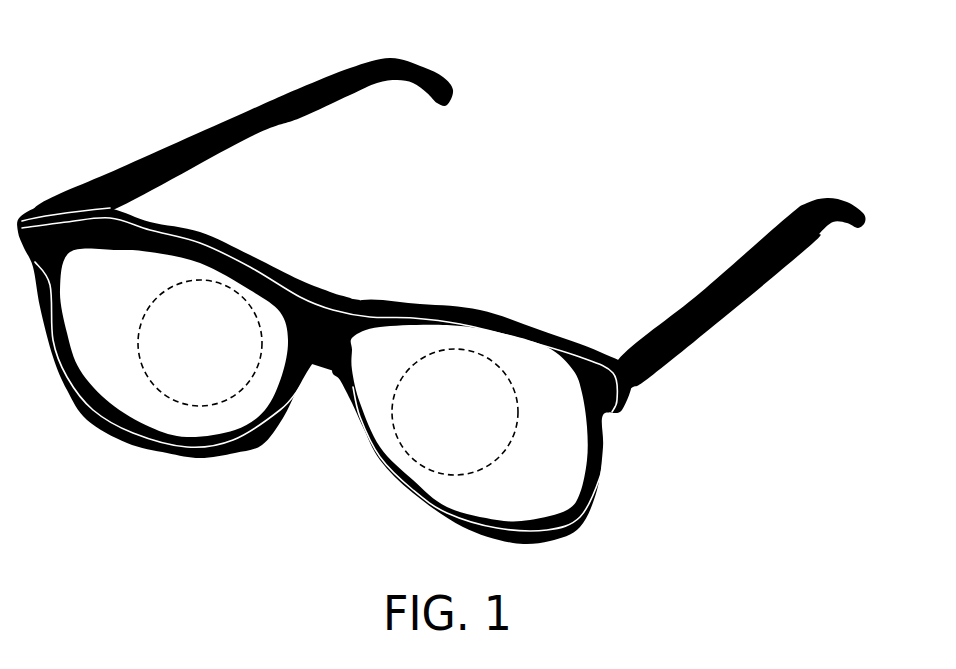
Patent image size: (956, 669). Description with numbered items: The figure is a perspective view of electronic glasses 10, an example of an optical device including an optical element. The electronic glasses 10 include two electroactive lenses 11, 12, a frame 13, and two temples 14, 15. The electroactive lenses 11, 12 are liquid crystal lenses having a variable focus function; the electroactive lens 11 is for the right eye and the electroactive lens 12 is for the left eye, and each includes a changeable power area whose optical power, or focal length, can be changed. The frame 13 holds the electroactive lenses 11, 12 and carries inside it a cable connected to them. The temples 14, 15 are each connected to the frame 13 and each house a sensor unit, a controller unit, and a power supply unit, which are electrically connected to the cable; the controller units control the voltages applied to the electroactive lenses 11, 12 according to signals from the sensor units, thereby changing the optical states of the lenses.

The electronic glasses 10 is at (71, 34).
The electroactive lens 11 is at (253, 303).
The electroactive lens 12 is at (385, 343).
The frame 13 is at (557, 330).
The temple 14 is at (207, 132).
The temple 15 is at (737, 262).